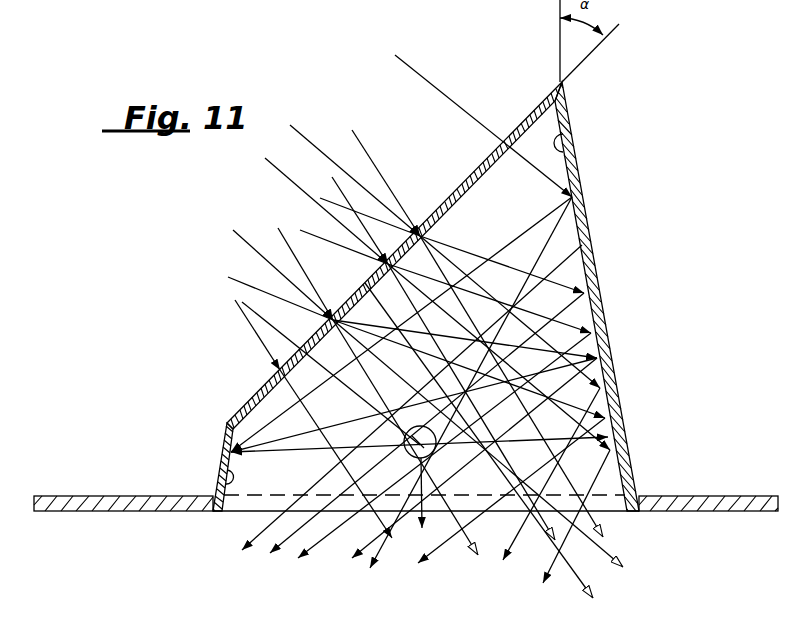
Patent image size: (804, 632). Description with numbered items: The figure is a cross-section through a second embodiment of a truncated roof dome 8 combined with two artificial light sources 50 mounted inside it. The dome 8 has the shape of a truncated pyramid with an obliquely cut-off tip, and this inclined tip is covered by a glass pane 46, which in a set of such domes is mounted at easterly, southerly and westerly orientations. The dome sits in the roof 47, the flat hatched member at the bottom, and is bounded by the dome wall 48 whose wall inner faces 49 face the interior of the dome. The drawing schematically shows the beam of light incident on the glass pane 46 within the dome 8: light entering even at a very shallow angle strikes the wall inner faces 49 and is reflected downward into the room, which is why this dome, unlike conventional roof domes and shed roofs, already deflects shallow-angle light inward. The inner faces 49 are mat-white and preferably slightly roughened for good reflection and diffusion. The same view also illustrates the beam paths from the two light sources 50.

The truncated roof dome 8 is at (628, 204).
The glass pane 46 is at (459, 193).
The roof 47 is at (709, 495).
The dome wall 48 is at (604, 308).
The wall inner faces 49 is at (575, 150).
The light sources 50 is at (437, 450).